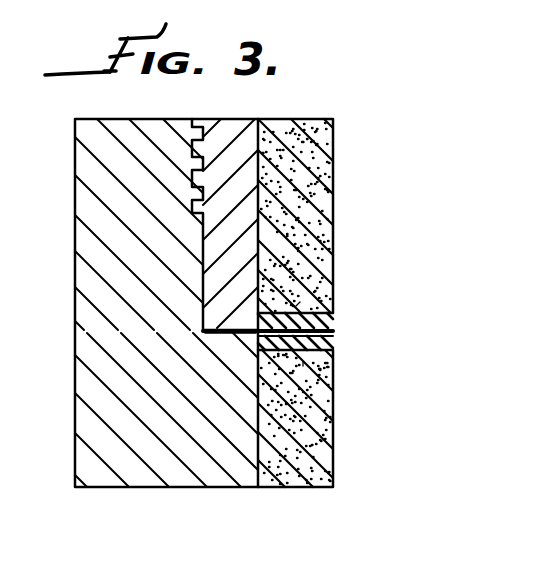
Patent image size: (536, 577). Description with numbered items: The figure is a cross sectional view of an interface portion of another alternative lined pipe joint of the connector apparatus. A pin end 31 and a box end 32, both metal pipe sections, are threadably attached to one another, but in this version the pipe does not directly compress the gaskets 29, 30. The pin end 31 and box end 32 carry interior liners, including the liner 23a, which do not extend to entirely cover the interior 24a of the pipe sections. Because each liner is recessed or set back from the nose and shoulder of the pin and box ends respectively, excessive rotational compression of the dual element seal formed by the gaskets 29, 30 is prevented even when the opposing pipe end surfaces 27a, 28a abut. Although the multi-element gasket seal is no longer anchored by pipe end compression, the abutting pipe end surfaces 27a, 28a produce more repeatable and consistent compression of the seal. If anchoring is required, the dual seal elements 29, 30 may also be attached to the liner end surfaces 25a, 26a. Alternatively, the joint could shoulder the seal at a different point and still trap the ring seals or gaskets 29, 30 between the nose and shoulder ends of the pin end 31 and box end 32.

The liner 23a is at (333, 450).
The interior of the pipe sections 24a is at (258, 152).
The liner end surface 25a is at (298, 305).
The liner end surface 26a is at (303, 362).
The pipe end surface 27a is at (214, 328).
The pipe end surface 28a is at (219, 334).
The gasket 29 is at (333, 318).
The gasket 30 is at (333, 346).
The pin end pipe section 31 is at (80, 172).
The box end pipe section 32 is at (240, 122).